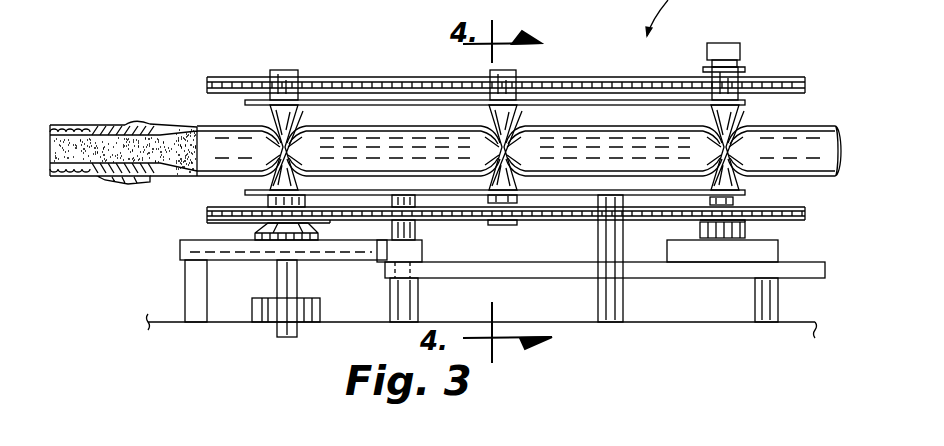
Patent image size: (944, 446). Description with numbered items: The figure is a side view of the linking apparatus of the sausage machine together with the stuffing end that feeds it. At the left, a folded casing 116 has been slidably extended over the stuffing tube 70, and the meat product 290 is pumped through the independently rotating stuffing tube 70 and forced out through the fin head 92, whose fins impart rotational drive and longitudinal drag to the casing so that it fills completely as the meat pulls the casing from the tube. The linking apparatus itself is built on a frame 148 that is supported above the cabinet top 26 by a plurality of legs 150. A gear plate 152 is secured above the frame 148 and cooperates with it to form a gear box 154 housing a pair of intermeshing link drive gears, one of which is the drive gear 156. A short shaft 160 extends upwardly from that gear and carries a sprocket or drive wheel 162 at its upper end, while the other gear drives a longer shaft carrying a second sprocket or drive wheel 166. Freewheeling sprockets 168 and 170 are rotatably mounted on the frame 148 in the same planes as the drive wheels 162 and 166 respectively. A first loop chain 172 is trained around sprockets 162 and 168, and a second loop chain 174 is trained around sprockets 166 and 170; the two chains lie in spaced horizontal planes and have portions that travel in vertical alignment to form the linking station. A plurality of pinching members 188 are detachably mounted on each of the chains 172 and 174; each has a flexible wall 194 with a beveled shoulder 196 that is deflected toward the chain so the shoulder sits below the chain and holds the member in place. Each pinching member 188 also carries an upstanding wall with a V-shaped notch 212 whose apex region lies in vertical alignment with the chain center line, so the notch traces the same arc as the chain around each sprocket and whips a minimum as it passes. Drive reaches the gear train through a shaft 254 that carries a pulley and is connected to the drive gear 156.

The cabinet top 26 is at (718, 322).
The stuffing tube 70 is at (66, 125).
The fin head 92 is at (134, 120).
The casing 116 is at (73, 177).
The frame 148 is at (560, 278).
The legs 150 is at (398, 297).
The gear plate 152 is at (412, 252).
The gear box 154 is at (180, 252).
The link drive gear 156 is at (180, 258).
The short shaft 160 is at (258, 223).
The sprocket or drive wheel 162 is at (235, 205).
The sprocket or drive wheel 166 is at (245, 77).
The freewheeling sprocket 168 is at (778, 207).
The freewheeling sprocket 170 is at (777, 77).
The first loop chain 172 is at (384, 223).
The second loop chain 174 is at (383, 77).
The pinching member 188 is at (296, 69).
The flexible wall 194 is at (281, 70).
The beveled shoulder 196 is at (509, 225).
The V-shaped notch 212 is at (305, 120).
The shaft 254 is at (278, 330).
The meat product 290 is at (106, 142).